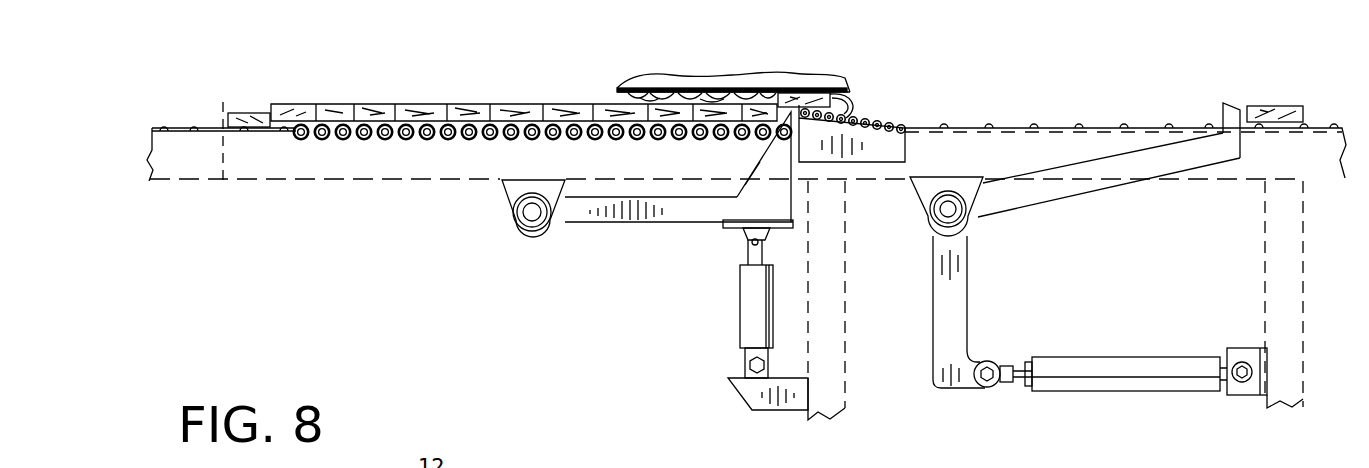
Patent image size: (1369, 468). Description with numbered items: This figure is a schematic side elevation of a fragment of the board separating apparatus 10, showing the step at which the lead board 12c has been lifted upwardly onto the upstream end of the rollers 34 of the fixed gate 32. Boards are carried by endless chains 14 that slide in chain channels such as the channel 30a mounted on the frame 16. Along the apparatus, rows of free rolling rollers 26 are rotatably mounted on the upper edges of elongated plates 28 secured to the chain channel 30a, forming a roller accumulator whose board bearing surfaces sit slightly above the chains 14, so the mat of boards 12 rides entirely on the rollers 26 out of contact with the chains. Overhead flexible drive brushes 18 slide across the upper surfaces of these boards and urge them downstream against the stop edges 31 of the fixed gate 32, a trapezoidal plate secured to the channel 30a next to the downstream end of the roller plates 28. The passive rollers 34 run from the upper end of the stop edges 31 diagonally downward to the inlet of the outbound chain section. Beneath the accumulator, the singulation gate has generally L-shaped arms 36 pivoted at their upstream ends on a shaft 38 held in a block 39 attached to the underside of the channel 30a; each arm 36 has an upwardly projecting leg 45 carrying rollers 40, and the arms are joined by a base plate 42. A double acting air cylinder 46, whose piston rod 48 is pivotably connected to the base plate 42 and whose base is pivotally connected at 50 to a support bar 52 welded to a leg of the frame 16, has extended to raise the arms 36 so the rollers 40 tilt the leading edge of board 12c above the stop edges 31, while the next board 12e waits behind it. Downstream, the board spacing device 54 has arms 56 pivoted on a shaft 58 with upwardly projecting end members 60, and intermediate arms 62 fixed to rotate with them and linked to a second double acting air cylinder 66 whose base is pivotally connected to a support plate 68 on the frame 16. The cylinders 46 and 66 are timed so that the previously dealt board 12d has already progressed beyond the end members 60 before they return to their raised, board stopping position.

The apparatus 10 is at (700, 252).
The mat of boards 12 is at (537, 104).
The lead board 12c is at (797, 94).
The previously dealt board 12d is at (1275, 112).
The next board 12e is at (762, 100).
The endless chains 14 is at (1090, 127).
The frame 16 is at (1293, 352).
The flexible drive brushes 18 is at (853, 94).
The rollers 26 is at (422, 142).
The elongated plates 28 is at (280, 181).
The chain channel 30a is at (224, 104).
The stop edges 31 is at (773, 158).
The fixed gate 32 is at (914, 152).
The rollers 34 is at (881, 116).
The arms 36 is at (657, 221).
The shaft 38 is at (533, 214).
The blocks 39 is at (502, 200).
The rollers 40 is at (777, 102).
The base plate 42 is at (796, 225).
The upwardly projecting leg 45 is at (741, 192).
The double acting air cylinder 46 is at (748, 307).
The piston rod 48 is at (770, 263).
The pivotal connection 50 is at (748, 366).
The support bar 52 is at (752, 404).
The board spacing device 54 is at (1062, 248).
The arms 56 is at (1057, 191).
The shaft 58 is at (958, 219).
The end member 60 is at (1221, 108).
The intermediate arms 62 is at (952, 334).
The second double acting air cylinder 66 is at (1148, 362).
The support plate 68 is at (1248, 397).